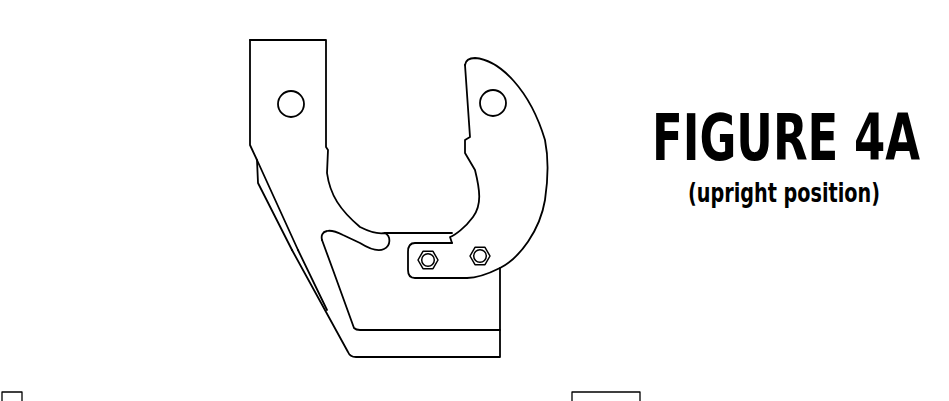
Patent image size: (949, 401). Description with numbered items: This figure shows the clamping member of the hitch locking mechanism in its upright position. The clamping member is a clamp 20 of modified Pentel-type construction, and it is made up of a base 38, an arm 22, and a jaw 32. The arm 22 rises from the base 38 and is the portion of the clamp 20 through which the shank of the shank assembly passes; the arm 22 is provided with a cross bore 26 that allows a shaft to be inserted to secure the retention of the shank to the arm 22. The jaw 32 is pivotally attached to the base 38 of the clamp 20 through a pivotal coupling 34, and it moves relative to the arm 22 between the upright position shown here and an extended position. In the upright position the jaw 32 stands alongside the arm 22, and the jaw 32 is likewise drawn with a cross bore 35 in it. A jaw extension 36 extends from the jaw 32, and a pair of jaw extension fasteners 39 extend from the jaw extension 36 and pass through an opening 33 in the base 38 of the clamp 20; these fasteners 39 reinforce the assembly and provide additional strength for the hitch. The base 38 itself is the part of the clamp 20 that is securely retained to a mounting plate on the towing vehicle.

The clamp 20 is at (316, 315).
The arm 22 is at (268, 142).
The cross bore 26 is at (282, 93).
The jaw 32 is at (530, 128).
The opening 33 is at (462, 105).
The pivotal coupling 34 is at (489, 252).
The cross bore 35 is at (488, 102).
The jaw extension 36 is at (448, 262).
The base 38 is at (355, 300).
The jaw extension fastener 39 is at (432, 268).